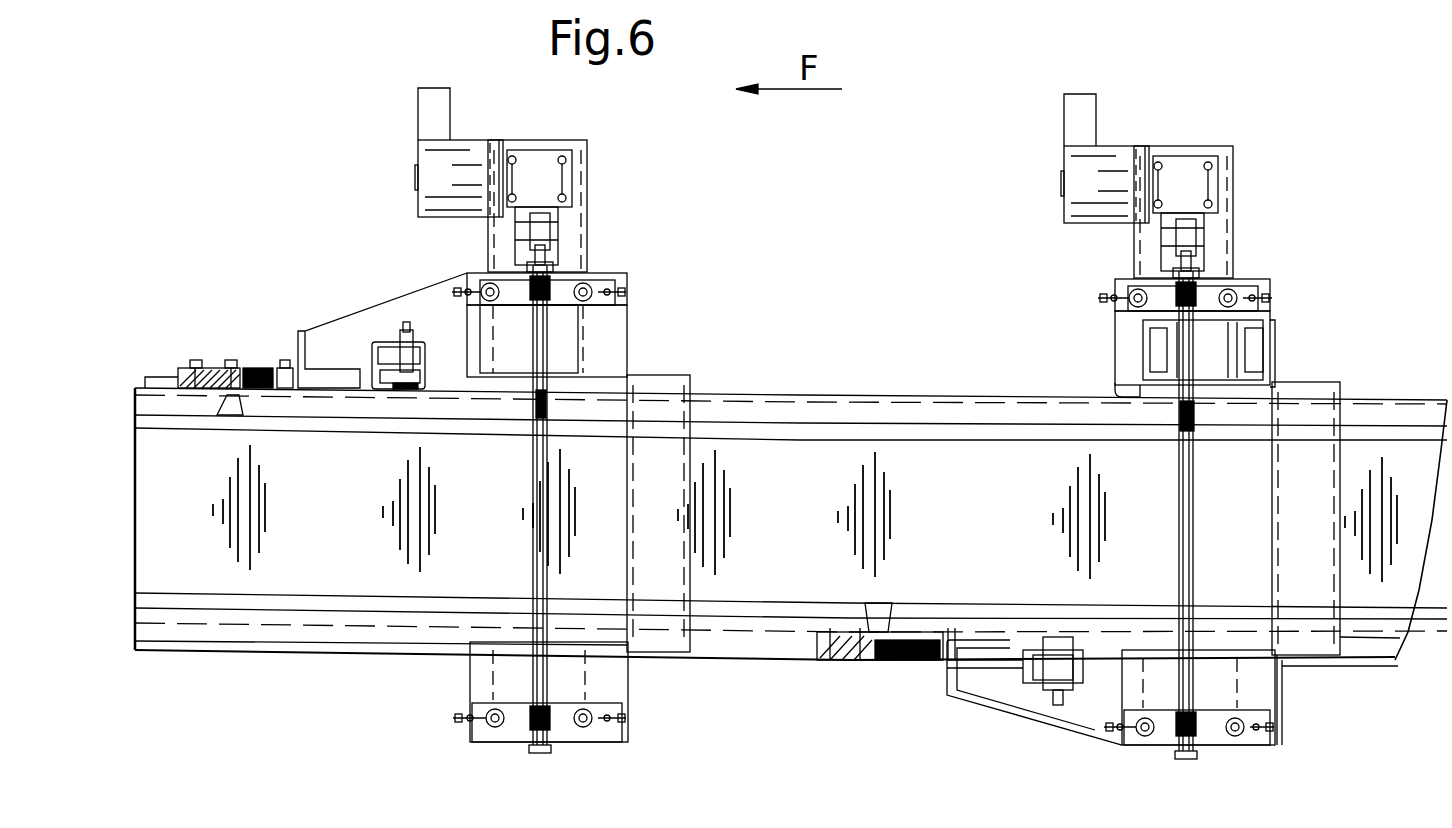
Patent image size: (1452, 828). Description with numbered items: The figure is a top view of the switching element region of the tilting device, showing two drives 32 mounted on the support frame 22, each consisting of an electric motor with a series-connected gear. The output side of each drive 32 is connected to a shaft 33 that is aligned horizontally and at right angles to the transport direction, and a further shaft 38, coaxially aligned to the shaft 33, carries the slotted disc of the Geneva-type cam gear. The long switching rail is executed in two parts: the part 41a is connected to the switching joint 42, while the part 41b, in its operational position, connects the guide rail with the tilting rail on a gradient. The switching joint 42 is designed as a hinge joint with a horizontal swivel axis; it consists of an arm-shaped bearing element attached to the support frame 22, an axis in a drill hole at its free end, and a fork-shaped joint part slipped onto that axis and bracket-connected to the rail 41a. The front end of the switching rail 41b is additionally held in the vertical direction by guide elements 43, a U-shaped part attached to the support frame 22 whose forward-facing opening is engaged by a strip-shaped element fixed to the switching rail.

The support frame 22 is at (607, 315).
The drive 32 is at (452, 160).
The shaft 33 is at (545, 415).
The shaft 38 is at (401, 322).
The switching rail part 41a is at (836, 405).
The switching rail part 41b is at (1353, 612).
The switching joint 42 is at (1205, 350).
The guide elements 43 is at (233, 372).